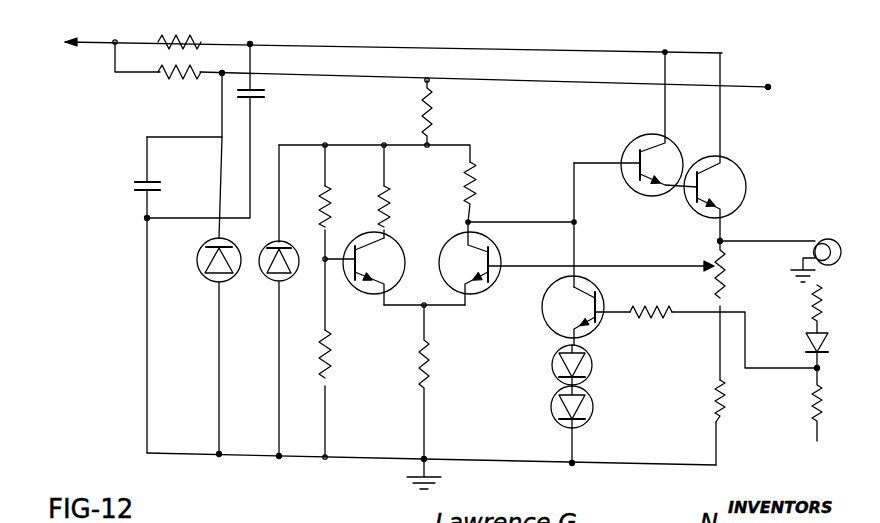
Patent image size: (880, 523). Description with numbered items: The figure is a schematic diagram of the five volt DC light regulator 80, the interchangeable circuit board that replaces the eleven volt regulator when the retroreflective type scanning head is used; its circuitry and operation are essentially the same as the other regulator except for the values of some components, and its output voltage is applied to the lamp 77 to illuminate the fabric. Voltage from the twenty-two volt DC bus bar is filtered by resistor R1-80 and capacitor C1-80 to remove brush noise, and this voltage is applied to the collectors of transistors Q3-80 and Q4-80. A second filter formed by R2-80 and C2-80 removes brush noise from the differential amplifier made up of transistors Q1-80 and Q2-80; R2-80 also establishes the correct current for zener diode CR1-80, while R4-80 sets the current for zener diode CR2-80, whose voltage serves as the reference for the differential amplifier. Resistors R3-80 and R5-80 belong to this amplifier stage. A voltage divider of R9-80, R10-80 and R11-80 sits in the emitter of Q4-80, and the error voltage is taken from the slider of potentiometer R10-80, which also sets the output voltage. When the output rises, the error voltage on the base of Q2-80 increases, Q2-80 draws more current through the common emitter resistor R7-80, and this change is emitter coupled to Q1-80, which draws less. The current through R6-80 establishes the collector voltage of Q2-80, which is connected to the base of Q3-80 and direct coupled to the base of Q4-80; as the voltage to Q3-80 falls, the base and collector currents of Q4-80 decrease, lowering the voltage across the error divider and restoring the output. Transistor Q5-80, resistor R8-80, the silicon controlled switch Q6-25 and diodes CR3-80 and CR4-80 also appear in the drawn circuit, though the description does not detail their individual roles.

The 5 volt DC light regulator 80 is at (137, 305).
The lamp 77 is at (818, 239).
The resistor R1-80 is at (200, 31).
The resistor R11-80 is at (171, 76).
The capacitor C1-80 is at (278, 94).
The capacitor C2-80 is at (116, 188).
The resistor R2-80 is at (414, 112).
The resistor R3-80 is at (350, 198).
The resistor R4-80 is at (336, 354).
The resistor R5-80 is at (410, 199).
The resistor R6-80 is at (497, 189).
The common emitter resistor R7-80 is at (449, 382).
The resistor R8-80 is at (654, 314).
The resistor R9-80 is at (743, 269).
The potentiometer R10-80 is at (748, 403).
The transistor Q1-80 is at (386, 261).
The transistor Q2-80 is at (576, 263).
The transistor Q3-80 is at (630, 129).
The transistor Q4-80 is at (735, 160).
The transistor Q5-80 is at (575, 310).
The silicon controlled switch Q6-25 is at (788, 363).
The zener diode CR1-80 is at (198, 268).
The zener diode CR2-80 is at (264, 272).
The diode CR3-80 is at (604, 378).
The diode CR4-80 is at (601, 409).